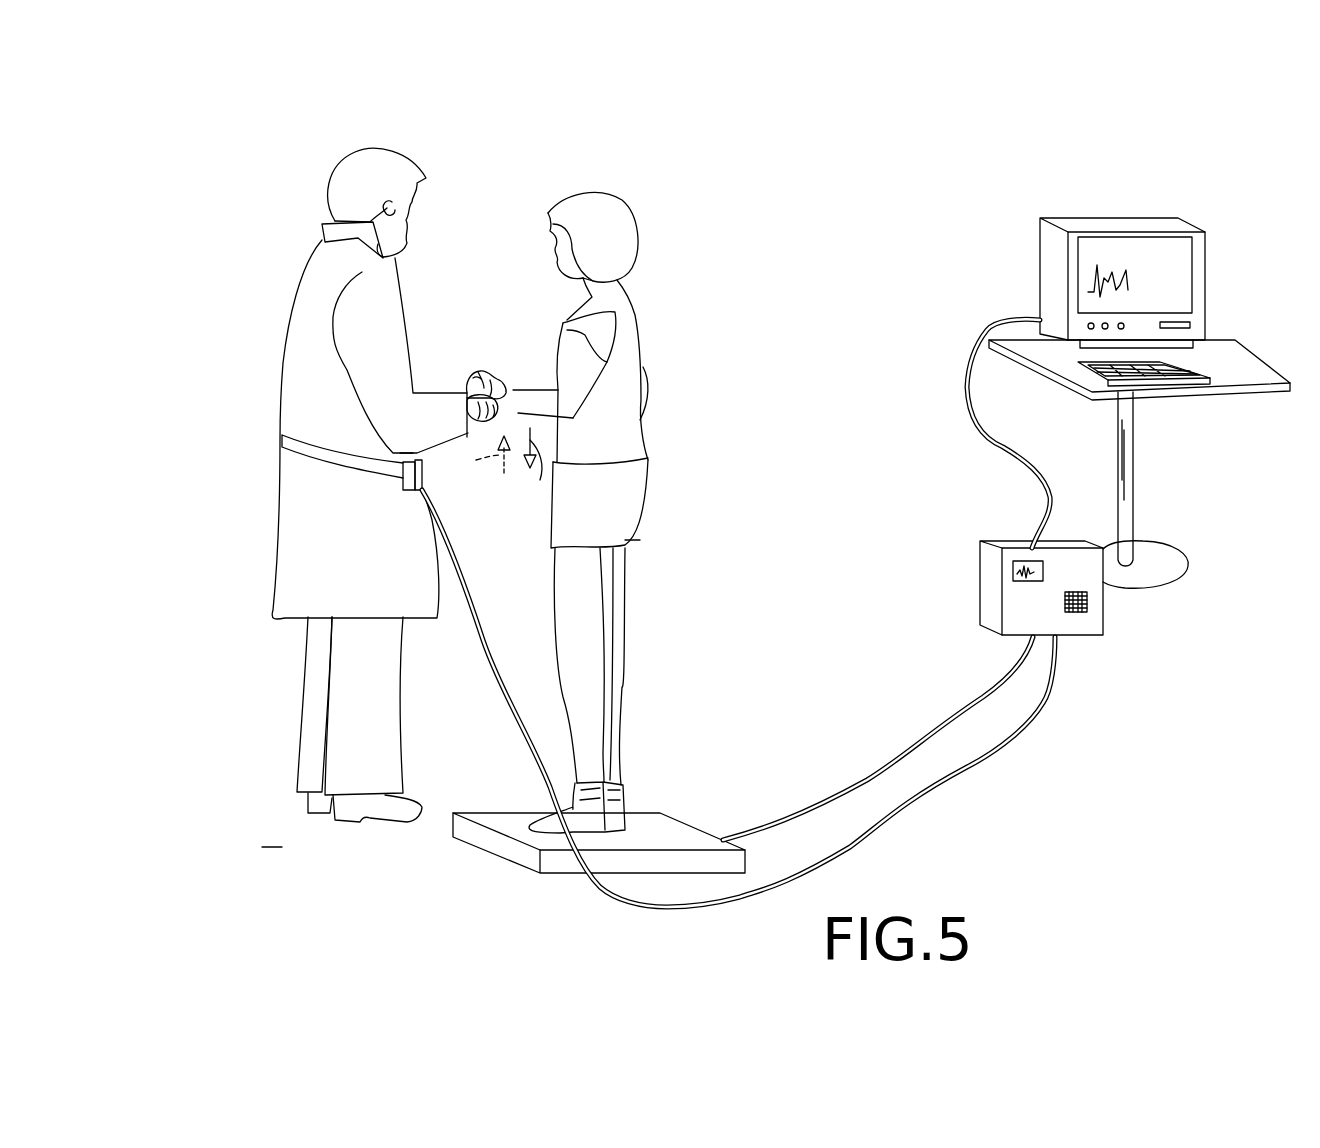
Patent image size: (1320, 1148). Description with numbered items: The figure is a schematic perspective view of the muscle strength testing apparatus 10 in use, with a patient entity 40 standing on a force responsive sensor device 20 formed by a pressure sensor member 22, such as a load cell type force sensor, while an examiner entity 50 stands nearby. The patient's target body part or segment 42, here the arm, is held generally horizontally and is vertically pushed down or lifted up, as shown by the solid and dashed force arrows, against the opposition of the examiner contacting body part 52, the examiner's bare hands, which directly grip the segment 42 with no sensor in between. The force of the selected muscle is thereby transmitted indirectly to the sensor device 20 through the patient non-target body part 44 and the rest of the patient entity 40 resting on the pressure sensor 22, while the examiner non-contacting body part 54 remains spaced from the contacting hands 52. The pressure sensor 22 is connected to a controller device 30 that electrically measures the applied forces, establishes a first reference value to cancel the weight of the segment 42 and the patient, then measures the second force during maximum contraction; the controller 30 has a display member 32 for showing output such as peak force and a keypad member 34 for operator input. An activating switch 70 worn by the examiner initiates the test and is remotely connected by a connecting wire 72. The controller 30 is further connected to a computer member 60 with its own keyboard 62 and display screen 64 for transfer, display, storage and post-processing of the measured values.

The muscle strength testing apparatus 10 is at (497, 158).
The force responsive sensor device 20 is at (498, 785).
The pressure sensor member 22 is at (668, 830).
The controller device 30 is at (1010, 545).
The display member 32 is at (1030, 562).
The keypad member 34 is at (1090, 602).
The patient entity 40 is at (680, 632).
The target body part or segment 42 is at (527, 397).
The patient non-target body part 44 is at (568, 300).
The examiner entity 50 is at (245, 674).
The examiner contacting body part 52 is at (500, 380).
The examiner non-contacting body part 54 is at (290, 285).
The computer member 60 is at (1200, 268).
The keyboard 62 is at (1190, 365).
The display screen 64 is at (1152, 255).
The activating switch 70 is at (408, 500).
The connecting wire 72 is at (975, 773).